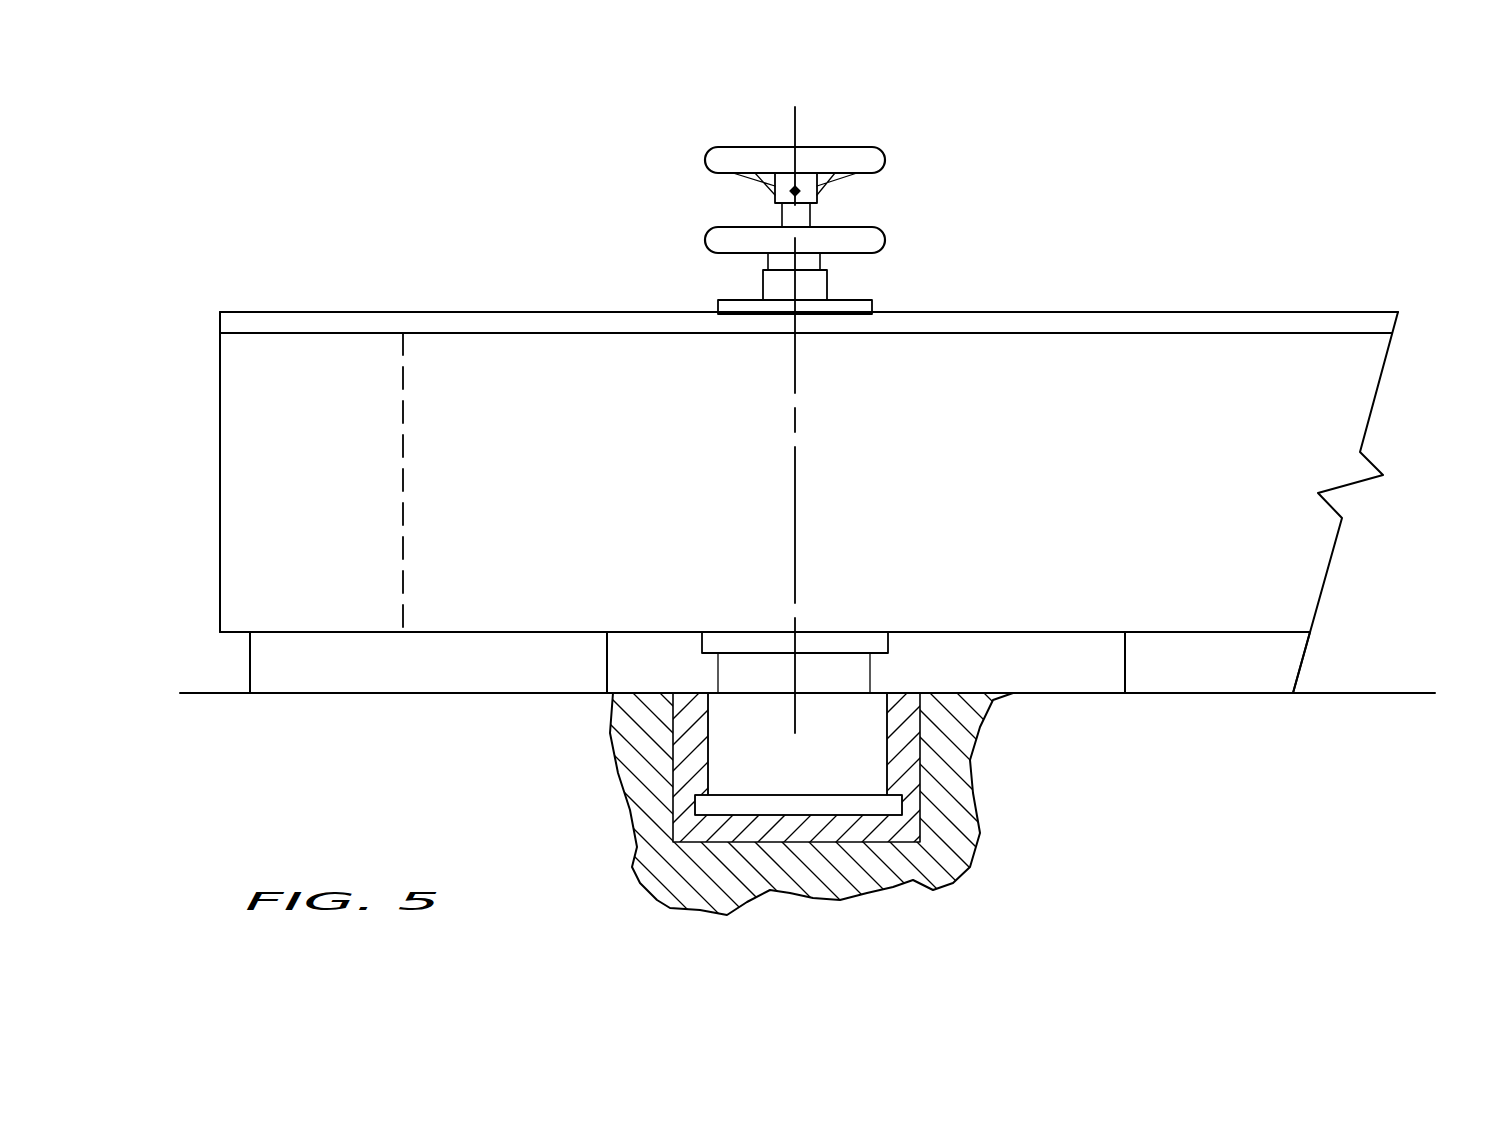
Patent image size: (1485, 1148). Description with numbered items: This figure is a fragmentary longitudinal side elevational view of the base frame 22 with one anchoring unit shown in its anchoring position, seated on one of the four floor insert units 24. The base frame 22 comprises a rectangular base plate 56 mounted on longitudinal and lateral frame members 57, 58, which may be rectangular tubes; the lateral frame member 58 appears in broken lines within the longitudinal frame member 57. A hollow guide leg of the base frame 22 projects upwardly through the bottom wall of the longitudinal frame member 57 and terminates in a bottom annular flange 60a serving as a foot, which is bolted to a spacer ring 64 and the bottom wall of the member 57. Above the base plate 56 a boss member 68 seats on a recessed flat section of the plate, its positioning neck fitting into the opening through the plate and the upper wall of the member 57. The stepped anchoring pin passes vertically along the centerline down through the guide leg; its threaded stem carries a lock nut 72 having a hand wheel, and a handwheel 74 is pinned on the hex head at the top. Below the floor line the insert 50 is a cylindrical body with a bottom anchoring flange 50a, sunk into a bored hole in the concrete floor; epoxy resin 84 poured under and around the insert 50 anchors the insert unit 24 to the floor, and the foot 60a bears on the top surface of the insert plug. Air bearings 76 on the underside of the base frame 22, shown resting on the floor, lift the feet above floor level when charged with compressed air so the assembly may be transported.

The base frame 22 is at (215, 457).
The floor insert unit 24 is at (708, 730).
The insert 50 is at (735, 705).
The bottom anchoring flange 50a is at (905, 848).
The base plate 56 is at (355, 312).
The longitudinal frame member 57 is at (1360, 377).
The lateral frame member 58 is at (405, 423).
The bottom annular flange 60a is at (860, 680).
The spacer ring 64 is at (866, 640).
The boss member 68 is at (813, 283).
The lock nut 72 is at (875, 245).
The handwheel 74 is at (875, 162).
The air bearing 76 is at (340, 681).
The epoxy resin 84 is at (680, 820).